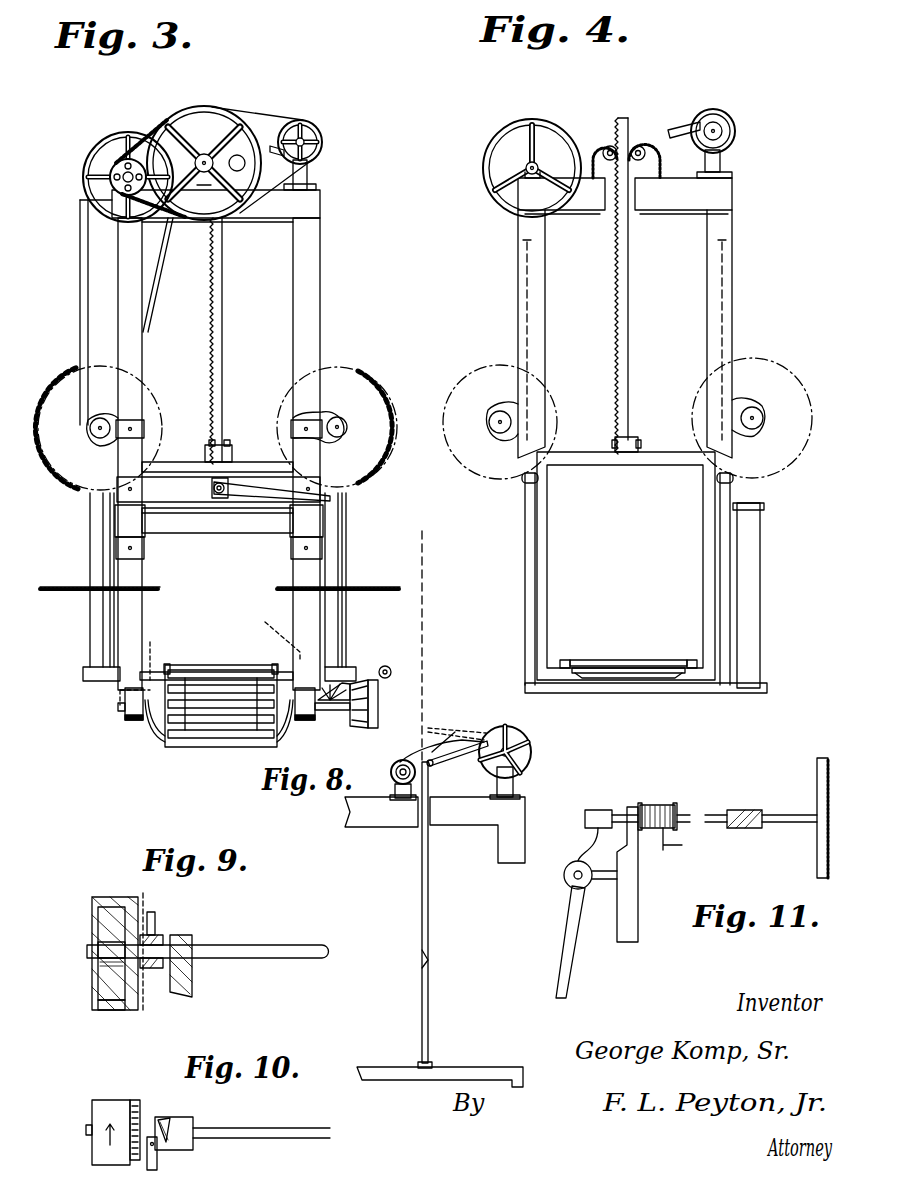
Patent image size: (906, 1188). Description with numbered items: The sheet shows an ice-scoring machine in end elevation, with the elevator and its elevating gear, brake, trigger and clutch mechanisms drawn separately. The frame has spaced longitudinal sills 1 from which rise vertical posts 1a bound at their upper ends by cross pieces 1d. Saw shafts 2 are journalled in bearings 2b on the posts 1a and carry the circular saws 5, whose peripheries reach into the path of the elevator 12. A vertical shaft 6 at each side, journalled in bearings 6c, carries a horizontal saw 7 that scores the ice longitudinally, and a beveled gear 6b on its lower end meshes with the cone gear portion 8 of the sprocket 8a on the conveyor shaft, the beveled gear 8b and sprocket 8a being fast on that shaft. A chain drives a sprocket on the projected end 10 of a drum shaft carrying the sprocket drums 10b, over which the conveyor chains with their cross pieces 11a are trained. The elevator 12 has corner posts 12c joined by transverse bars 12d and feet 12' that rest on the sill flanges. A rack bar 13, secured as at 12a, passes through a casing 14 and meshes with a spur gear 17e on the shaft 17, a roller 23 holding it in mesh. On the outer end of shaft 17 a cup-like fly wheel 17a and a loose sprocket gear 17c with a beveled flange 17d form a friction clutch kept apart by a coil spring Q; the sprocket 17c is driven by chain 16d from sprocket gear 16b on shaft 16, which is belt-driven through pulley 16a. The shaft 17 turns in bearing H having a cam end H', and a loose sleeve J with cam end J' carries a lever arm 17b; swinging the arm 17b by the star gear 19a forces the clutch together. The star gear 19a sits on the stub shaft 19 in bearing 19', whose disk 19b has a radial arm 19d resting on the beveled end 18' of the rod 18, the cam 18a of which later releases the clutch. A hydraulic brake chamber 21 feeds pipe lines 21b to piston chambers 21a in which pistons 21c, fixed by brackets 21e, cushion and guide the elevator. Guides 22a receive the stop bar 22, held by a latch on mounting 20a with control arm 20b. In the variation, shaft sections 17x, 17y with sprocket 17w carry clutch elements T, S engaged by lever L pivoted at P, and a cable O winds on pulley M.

In FIG. 3, the longitudinal sills 1 is at (150, 652).
In FIG. 11, the longitudinal sills 1 is at (634, 868).
In FIG. 3, the vertical posts 1a is at (312, 290).
In FIG. 4, the vertical posts 1a is at (527, 222).
In FIG. 8, the vertical posts 1a is at (506, 840).
In FIG. 3, the top cross pieces 1d is at (278, 213).
In FIG. 4, the top cross pieces 1d is at (674, 212).
In FIG. 8, the top cross pieces 1d is at (372, 826).
In FIG. 3, the saw shafts 2 is at (96, 438).
In FIG. 4, the saw shafts 2 is at (489, 423).
In FIG. 3, the bearings 2b is at (84, 442).
In FIG. 4, the bearings 2b is at (512, 404).
In FIG. 3, the circular saws 5 is at (62, 396).
In FIG. 4, the circular saws 5 is at (802, 382).
In FIG. 3, the vertical shaft 6 is at (90, 618).
In FIG. 3, the beveled gear 6b is at (318, 695).
In FIG. 3, the bearings 6c is at (83, 675).
In FIG. 3, the saws 7 is at (62, 589).
In FIG. 3, the shaft 8 is at (380, 702).
In FIG. 3, the sprocket 8a is at (387, 662).
In FIG. 3, the beveled gear 8b is at (350, 722).
In FIG. 3, the projected end of drum shaft 10 is at (118, 708).
In FIG. 3, the sprocket drums 10b is at (152, 730).
In FIG. 3, the cross pieces 11a is at (197, 740).
In FIG. 4, the cross pieces 11a is at (604, 660).
In FIG. 3, the elevator 12 is at (219, 454).
In FIG. 8, the elevator 12 is at (440, 1061).
In FIG. 3, the feet 12' is at (216, 662).
In FIG. 4, the feet 12' is at (631, 646).
In FIG. 3, the rack bar securement 12a is at (210, 445).
In FIG. 4, the corner posts 12c is at (548, 568).
In FIG. 3, the transverse bars 12d is at (255, 461).
In FIG. 4, the transverse bars 12d is at (608, 462).
In FIG. 3, the rack bar 13 is at (212, 332).
In FIG. 4, the rack bar 13 is at (630, 331).
In FIG. 4, the casing 14 is at (604, 146).
In FIG. 3, the shaft 16 is at (112, 190).
In FIG. 3, the pulley 16a is at (85, 168).
In FIG. 4, the pulley 16a is at (486, 168).
In FIG. 3, the sprocket gear 16b is at (114, 163).
In FIG. 3, the chain 16d is at (154, 133).
In FIG. 3, the shaft 17 is at (204, 170).
In FIG. 8, the shaft 17 is at (392, 772).
In FIG. 9, the shaft 17 is at (300, 945).
In FIG. 10, the shaft 17 is at (286, 1130).
In FIG. 3, the fly wheel 17a is at (204, 107).
In FIG. 3, the lever arm 17b is at (262, 130).
In FIG. 8, the lever arm 17b is at (410, 760).
In FIG. 9, the lever arm 17b is at (156, 920).
In FIG. 10, the lever arm 17b is at (158, 1165).
In FIG. 9, the sprocket gear 17c is at (128, 1010).
In FIG. 10, the sprocket gear 17c is at (130, 1100).
In FIG. 9, the flange 17d is at (122, 898).
In FIG. 4, the spur gear 17e is at (618, 125).
In FIG. 9, the spur gear 17e is at (92, 906).
In FIG. 10, the spur gear 17e is at (92, 1120).
In FIG. 11, the sprocket 17w is at (816, 790).
In FIG. 11, the shaft section 17x is at (780, 825).
In FIG. 11, the shaft section 17y is at (618, 818).
In FIG. 3, the rod 18 is at (202, 275).
In FIG. 8, the rod 18 is at (448, 796).
In FIG. 8, the beveled upper end 18' is at (457, 726).
In FIG. 3, the cam 18a is at (225, 352).
In FIG. 8, the cam 18a is at (432, 968).
In FIG. 3, the stub shaft 19 is at (320, 142).
In FIG. 4, the stub shaft 19 is at (744, 131).
In FIG. 8, the stub shaft 19 is at (513, 739).
In FIG. 3, the bearing 19' is at (326, 182).
In FIG. 4, the bearing 19' is at (732, 158).
In FIG. 8, the bearing 19' is at (526, 781).
In FIG. 3, the star gear 19a is at (318, 149).
In FIG. 8, the star gear 19a is at (520, 750).
In FIG. 3, the disk 19b is at (310, 125).
In FIG. 4, the disk 19b is at (726, 117).
In FIG. 8, the disk 19b is at (504, 730).
In FIG. 3, the radial arm 19d is at (281, 161).
In FIG. 4, the radial arm 19d is at (674, 132).
In FIG. 8, the radial arm 19d is at (438, 764).
In FIG. 3, the mounting 20a is at (210, 488).
In FIG. 3, the control arm 20b is at (332, 499).
In FIG. 4, the main hydraulic brake chamber 21 is at (760, 601).
In FIG. 4, the piston chambers 21a is at (524, 572).
In FIG. 4, the pipe lines 21b is at (646, 694).
In FIG. 4, the pistons 21c is at (528, 292).
In FIG. 4, the brackets 21e is at (520, 480).
In FIG. 3, the cross bar 22 is at (190, 530).
In FIG. 3, the guides 22a is at (130, 525).
In FIG. 4, the roller 23 is at (641, 145).
In FIG. 9, the bearing H is at (199, 966).
In FIG. 10, the bearing H is at (186, 1124).
In FIG. 9, the cam end H' is at (186, 946).
In FIG. 10, the cam end H' is at (177, 1111).
In FIG. 8, the loose sleeve J is at (386, 787).
In FIG. 9, the loose sleeve J is at (157, 995).
In FIG. 10, the loose sleeve J is at (151, 1123).
In FIG. 9, the cam end J' is at (179, 925).
In FIG. 11, the lever L is at (570, 920).
In FIG. 11, the pulley M is at (662, 806).
In FIG. 11, the cable O is at (680, 842).
In FIG. 11, the pivot P is at (564, 878).
In FIG. 9, the coil spring Q is at (110, 938).
In FIG. 11, the clutch element S is at (728, 830).
In FIG. 11, the clutch element T is at (748, 810).